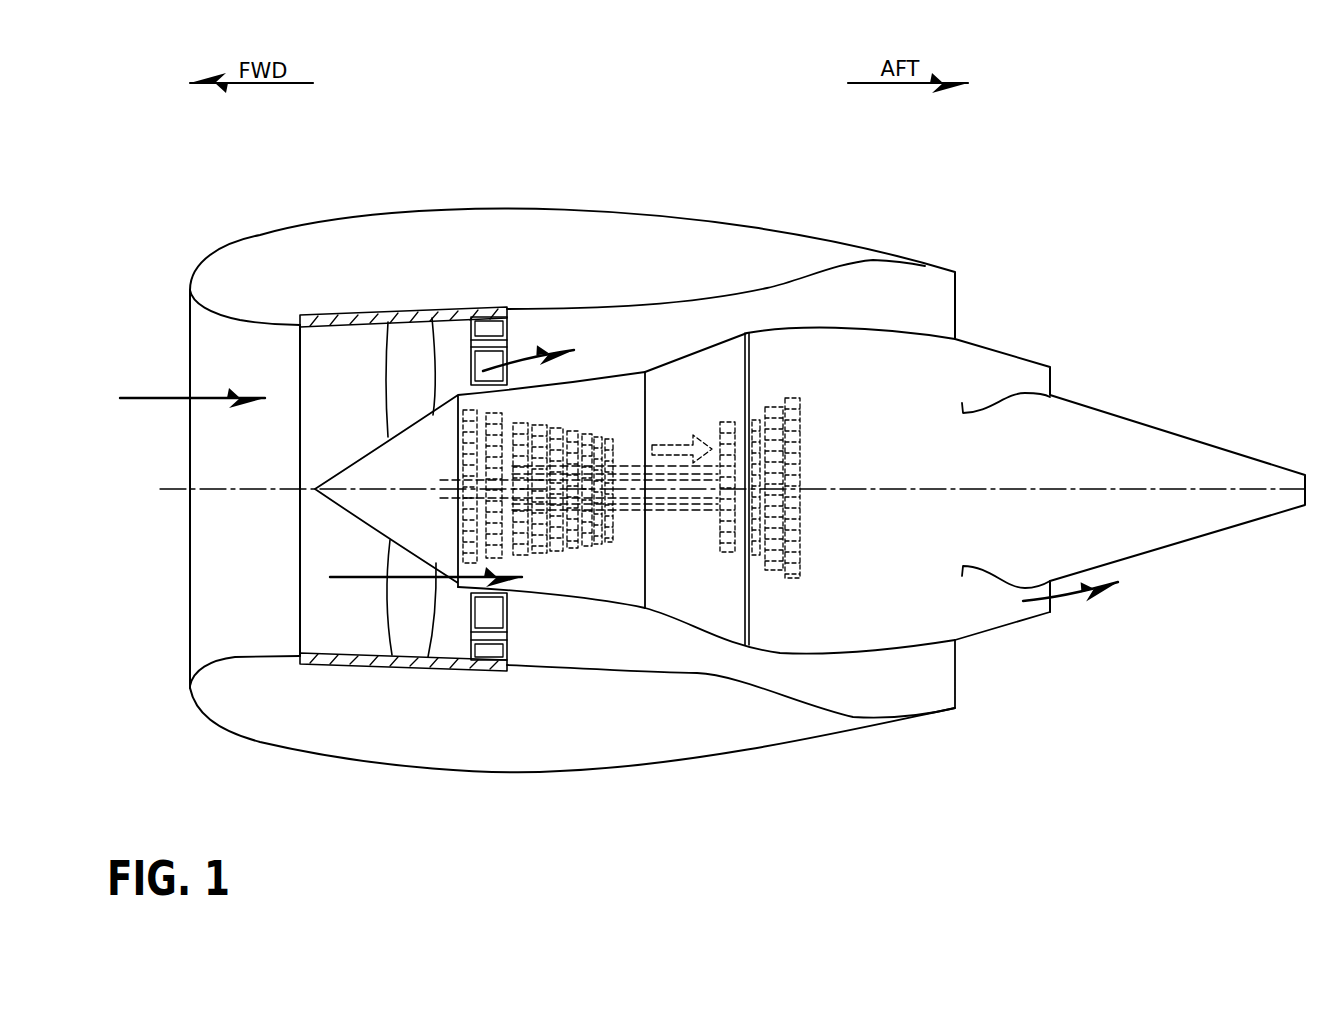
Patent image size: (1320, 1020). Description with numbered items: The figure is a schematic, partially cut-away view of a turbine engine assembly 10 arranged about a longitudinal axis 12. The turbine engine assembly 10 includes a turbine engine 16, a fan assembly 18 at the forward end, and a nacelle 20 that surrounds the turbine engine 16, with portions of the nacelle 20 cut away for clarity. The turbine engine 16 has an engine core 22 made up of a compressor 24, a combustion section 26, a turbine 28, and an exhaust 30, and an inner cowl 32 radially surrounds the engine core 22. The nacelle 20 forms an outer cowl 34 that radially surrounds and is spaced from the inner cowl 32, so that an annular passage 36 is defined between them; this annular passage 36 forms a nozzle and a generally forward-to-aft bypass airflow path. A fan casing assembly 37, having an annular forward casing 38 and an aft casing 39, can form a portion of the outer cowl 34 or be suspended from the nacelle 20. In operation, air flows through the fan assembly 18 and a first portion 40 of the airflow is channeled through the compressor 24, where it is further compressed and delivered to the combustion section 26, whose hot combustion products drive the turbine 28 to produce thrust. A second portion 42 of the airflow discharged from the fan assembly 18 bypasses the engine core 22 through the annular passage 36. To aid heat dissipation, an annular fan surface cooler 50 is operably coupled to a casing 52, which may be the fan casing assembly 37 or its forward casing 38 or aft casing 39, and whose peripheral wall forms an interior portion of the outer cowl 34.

The turbine engine assembly 10 is at (425, 152).
The longitudinal axis 12 is at (170, 493).
The turbine engine 16 is at (627, 398).
The fan assembly 18 is at (403, 340).
The nacelle 20 is at (278, 238).
The engine core 22 is at (634, 570).
The compressor 24 is at (560, 542).
The combustion section 26 is at (673, 522).
The turbine 28 is at (777, 565).
The exhaust 30 is at (1017, 615).
The inner cowl 32 is at (757, 333).
The outer cowl 34 is at (770, 289).
The annular passage 36 is at (911, 700).
The fan casing assembly 37 is at (320, 611).
The annular forward casing 38 is at (300, 572).
The aft casing 39 is at (487, 312).
The first portion of the airflow 40 is at (448, 669).
The second portion of the airflow 42 is at (545, 315).
The surface cooler 50 is at (490, 617).
The casing 52 is at (318, 310).